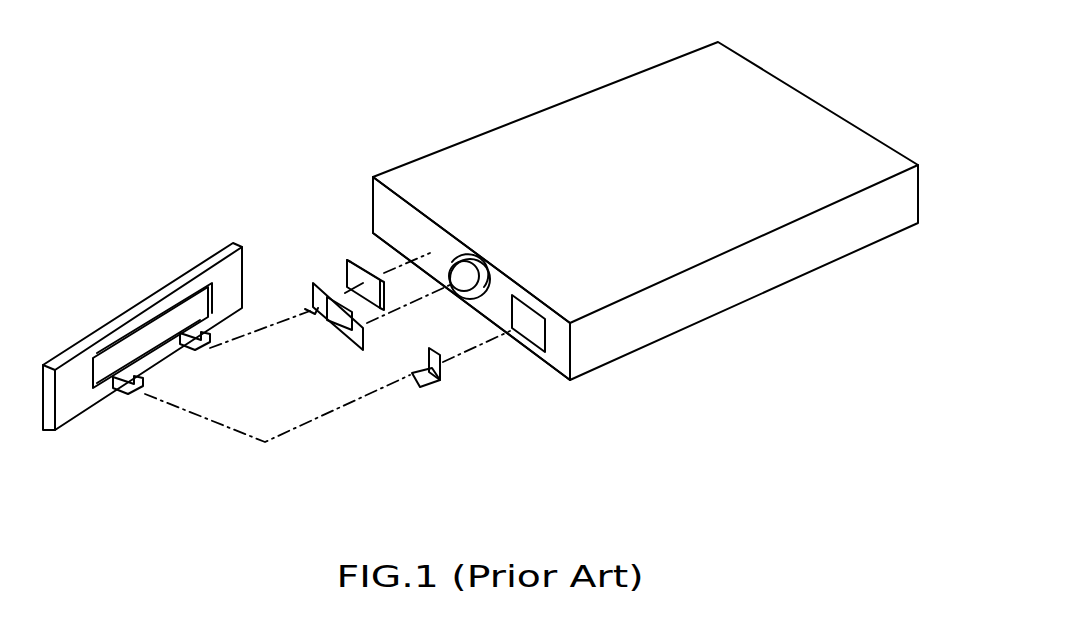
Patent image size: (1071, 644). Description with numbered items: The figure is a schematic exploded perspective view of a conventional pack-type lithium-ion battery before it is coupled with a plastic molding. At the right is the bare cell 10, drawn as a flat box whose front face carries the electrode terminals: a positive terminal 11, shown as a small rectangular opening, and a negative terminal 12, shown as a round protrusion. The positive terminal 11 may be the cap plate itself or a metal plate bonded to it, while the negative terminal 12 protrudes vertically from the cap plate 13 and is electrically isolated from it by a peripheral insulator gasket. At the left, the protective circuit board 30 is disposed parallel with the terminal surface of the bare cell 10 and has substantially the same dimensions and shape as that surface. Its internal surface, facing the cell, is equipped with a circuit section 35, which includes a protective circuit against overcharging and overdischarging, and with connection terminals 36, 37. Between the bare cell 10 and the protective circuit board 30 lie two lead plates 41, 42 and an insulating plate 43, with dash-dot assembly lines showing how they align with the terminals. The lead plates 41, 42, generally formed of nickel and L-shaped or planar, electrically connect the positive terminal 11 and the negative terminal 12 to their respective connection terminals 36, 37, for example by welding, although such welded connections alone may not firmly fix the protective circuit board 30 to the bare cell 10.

The bare cell 10 is at (576, 128).
The positive terminal 11 is at (523, 323).
The negative terminal 12 is at (457, 272).
The cap plate 13 is at (380, 213).
The protective circuit board 30 is at (74, 372).
The circuit section 35 is at (170, 325).
The connection terminal 36 is at (116, 392).
The connection terminal 37 is at (193, 352).
The lead plate 41 is at (434, 381).
The lead plate 42 is at (308, 316).
The insulating plate 43 is at (333, 273).